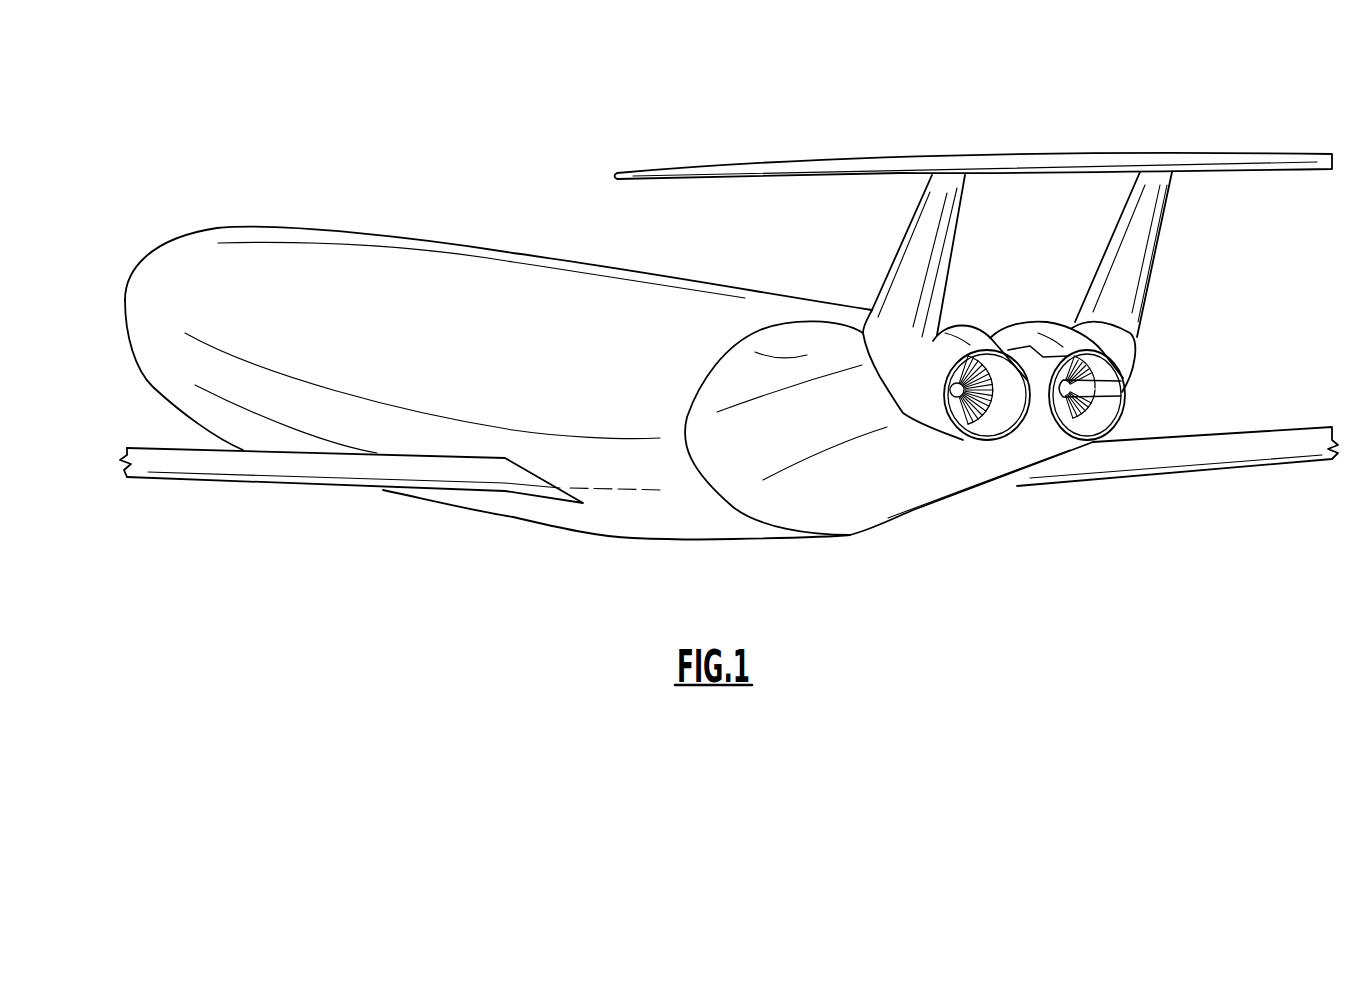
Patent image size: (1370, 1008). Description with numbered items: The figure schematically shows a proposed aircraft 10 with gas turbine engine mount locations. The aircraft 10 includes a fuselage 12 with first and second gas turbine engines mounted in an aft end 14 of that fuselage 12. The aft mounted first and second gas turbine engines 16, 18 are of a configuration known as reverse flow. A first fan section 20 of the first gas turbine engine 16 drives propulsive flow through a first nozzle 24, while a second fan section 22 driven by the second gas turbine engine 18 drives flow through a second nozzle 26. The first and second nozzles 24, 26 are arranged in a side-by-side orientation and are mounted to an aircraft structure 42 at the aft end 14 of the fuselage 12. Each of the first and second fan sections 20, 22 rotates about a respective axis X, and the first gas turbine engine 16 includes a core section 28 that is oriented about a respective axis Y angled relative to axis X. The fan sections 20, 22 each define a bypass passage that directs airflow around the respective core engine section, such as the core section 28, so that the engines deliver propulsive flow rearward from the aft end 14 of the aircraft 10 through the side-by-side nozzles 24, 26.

The aircraft 10 is at (729, 324).
The fuselage 12 is at (623, 523).
The aft end 14 is at (956, 536).
The first gas turbine engine 16 is at (1034, 305).
The second gas turbine engine 18 is at (957, 305).
The first fan section 20 is at (1093, 417).
The second fan section 22 is at (983, 412).
The first nozzle 24 is at (1127, 370).
The second nozzle 26 is at (962, 447).
The core section 28 is at (1115, 393).
The aircraft structure 42 is at (920, 401).